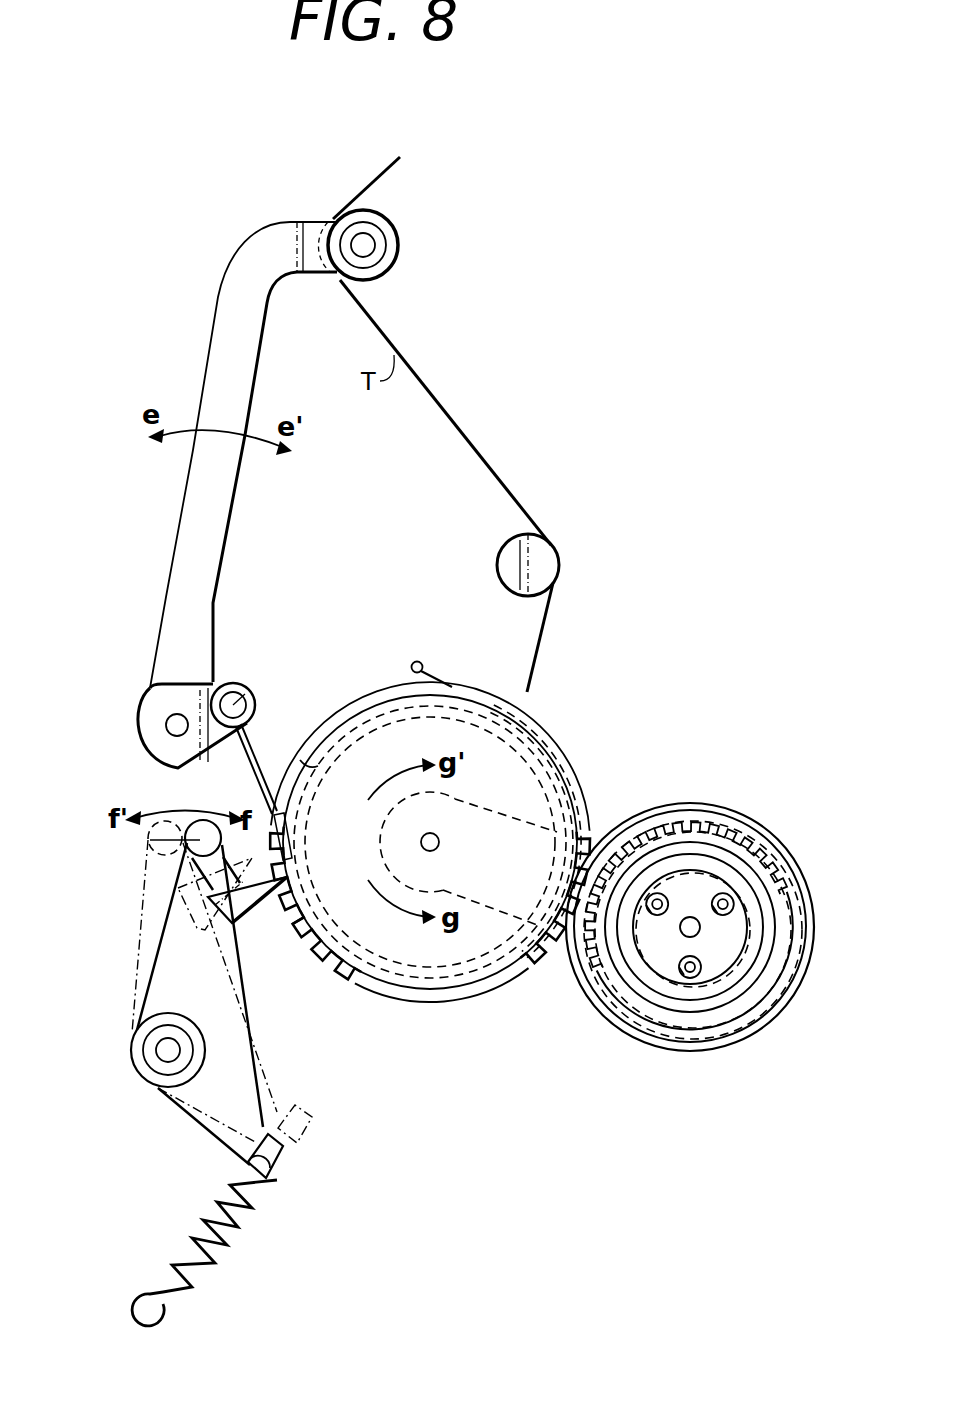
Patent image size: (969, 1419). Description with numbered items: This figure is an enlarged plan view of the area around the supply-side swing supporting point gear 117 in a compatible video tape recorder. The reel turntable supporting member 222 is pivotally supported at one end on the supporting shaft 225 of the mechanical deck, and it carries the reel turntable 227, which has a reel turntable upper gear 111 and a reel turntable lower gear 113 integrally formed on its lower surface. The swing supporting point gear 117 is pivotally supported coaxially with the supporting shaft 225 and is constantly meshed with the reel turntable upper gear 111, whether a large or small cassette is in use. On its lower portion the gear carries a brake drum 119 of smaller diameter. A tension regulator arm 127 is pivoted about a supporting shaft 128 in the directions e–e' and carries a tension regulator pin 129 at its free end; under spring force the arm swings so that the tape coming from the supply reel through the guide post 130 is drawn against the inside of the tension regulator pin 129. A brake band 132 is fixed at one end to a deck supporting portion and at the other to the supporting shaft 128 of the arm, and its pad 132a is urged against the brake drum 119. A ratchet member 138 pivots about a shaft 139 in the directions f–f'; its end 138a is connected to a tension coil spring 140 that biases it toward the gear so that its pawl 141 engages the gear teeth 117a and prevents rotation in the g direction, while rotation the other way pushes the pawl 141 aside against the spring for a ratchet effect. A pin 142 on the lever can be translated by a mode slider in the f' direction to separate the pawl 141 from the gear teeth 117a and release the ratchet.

The reel turntable upper gear 111 is at (640, 818).
The reel turntable lower gear 113 is at (726, 840).
The swing supporting point gear 117 is at (296, 765).
The gear teeth 117a is at (313, 935).
The brake drum 119 is at (357, 745).
The tension regulator arm 127 is at (180, 530).
The supporting shaft 128 is at (240, 705).
The tension regulator pin 129 is at (400, 237).
The guide post 130 is at (497, 570).
The brake band 132 is at (256, 766).
The pad 132a is at (522, 713).
The ratchet member 138 is at (160, 977).
The one end of ratchet member 138a is at (280, 1176).
The shaft 139 is at (167, 1052).
The tension coil spring 140 is at (230, 1236).
The pawl 141 is at (252, 905).
The pin 142 is at (152, 838).
The reel turntable supporting member 222 is at (475, 965).
The supporting shaft 225 is at (438, 849).
The reel turntable 227 is at (655, 985).